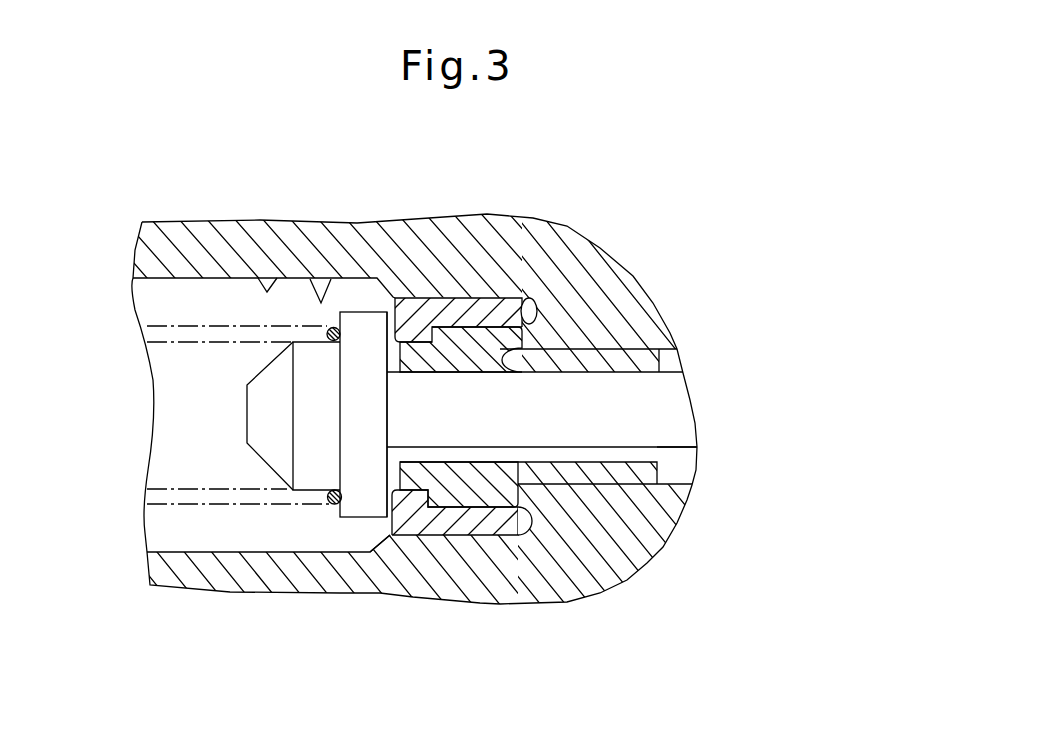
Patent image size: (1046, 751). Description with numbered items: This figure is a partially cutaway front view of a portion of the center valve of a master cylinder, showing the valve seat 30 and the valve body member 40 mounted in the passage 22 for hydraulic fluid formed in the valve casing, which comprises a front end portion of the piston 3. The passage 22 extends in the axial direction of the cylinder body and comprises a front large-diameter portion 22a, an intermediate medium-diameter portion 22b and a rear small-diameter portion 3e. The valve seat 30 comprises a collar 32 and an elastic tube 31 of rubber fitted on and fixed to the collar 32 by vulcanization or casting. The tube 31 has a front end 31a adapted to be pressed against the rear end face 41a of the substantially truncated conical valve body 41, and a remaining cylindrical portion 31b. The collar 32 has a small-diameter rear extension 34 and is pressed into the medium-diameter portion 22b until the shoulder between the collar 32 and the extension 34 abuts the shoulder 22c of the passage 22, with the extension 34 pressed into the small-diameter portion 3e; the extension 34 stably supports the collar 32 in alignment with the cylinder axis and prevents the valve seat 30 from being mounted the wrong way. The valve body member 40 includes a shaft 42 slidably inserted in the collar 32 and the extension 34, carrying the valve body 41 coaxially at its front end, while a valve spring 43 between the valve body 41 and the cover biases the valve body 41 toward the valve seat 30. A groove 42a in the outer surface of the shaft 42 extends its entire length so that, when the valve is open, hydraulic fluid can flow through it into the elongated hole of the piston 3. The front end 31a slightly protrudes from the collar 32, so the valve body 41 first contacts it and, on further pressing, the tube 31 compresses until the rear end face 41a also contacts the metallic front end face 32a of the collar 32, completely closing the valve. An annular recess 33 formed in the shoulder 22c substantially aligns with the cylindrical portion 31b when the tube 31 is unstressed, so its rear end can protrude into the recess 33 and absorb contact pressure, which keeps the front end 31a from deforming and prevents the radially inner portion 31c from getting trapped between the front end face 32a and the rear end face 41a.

The piston 3 is at (207, 270).
The small-diameter portion 3e is at (563, 485).
The passage 22 is at (215, 402).
The large-diameter portion 22a is at (258, 278).
The medium-diameter portion 22b is at (430, 535).
The shoulder 22c is at (505, 352).
The valve seat 30 is at (589, 410).
The elastic tube 31 is at (589, 427).
The front end 31a is at (405, 330).
The cylindrical portion 31b is at (497, 310).
The radially inner portion 31c is at (398, 533).
The collar 32 is at (454, 394).
The front end face 32a is at (397, 360).
The annular recess 33 is at (537, 327).
The rear extension 34 is at (657, 466).
The valve body member 40 is at (320, 279).
The valve body 41 is at (312, 478).
The rear end face 41a is at (388, 535).
The shaft 42 is at (600, 423).
The groove 42a is at (675, 457).
The valve spring 43 is at (218, 497).